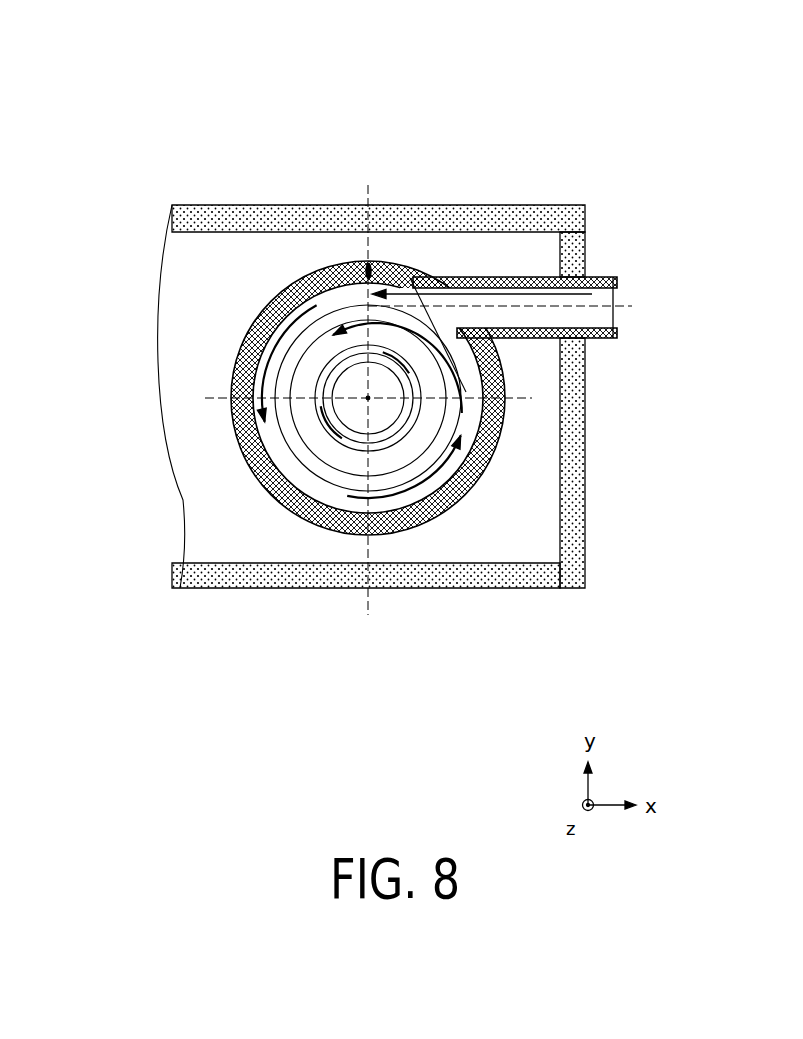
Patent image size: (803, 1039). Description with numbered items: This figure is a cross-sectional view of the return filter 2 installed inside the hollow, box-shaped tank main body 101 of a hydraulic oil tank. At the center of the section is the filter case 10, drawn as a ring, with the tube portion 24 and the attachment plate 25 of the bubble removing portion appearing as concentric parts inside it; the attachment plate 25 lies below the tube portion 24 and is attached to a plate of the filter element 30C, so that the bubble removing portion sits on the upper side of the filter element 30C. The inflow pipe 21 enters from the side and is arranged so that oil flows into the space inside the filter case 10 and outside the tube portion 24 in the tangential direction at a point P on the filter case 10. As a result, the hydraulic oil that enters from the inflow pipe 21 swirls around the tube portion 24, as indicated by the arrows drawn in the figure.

The return filter 2 is at (651, 62).
The filter case 10 is at (273, 492).
The inflow pipe 21 is at (540, 277).
The tube portion 24 is at (352, 350).
The attachment plate 25 is at (298, 418).
The filter element 30C is at (280, 344).
The tank main body 101 is at (468, 214).
The point on the filter case P is at (367, 262).